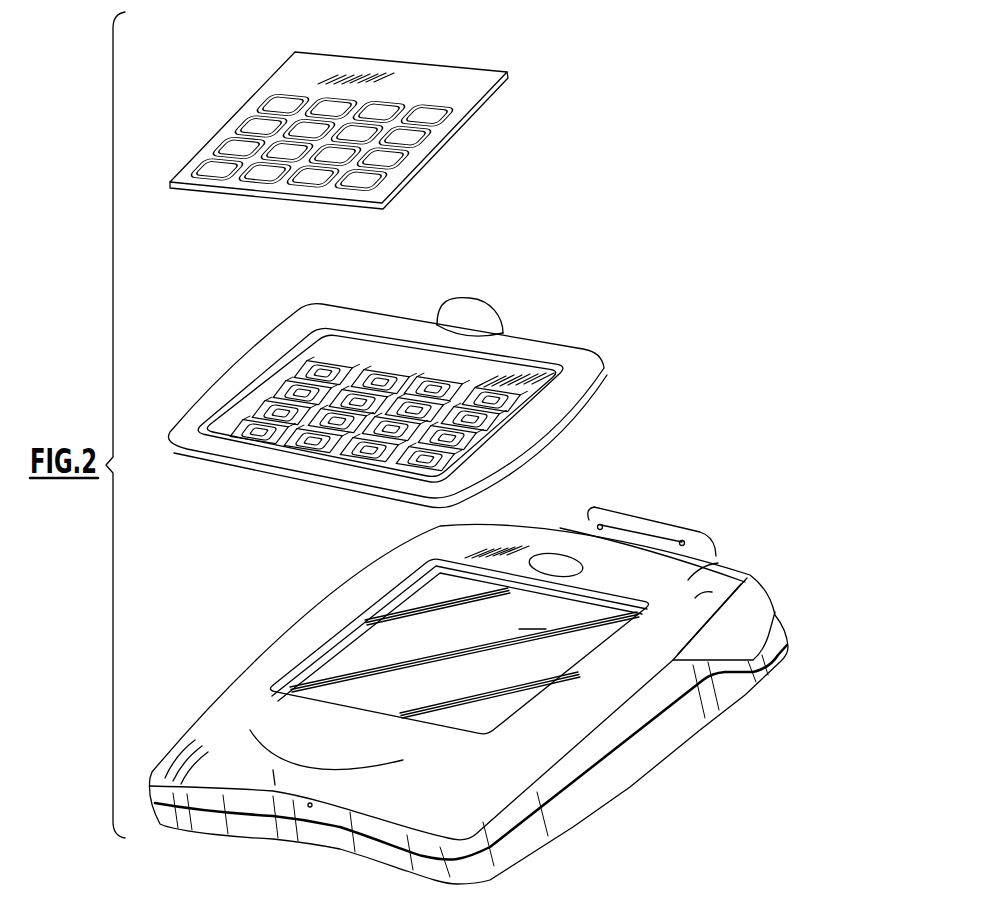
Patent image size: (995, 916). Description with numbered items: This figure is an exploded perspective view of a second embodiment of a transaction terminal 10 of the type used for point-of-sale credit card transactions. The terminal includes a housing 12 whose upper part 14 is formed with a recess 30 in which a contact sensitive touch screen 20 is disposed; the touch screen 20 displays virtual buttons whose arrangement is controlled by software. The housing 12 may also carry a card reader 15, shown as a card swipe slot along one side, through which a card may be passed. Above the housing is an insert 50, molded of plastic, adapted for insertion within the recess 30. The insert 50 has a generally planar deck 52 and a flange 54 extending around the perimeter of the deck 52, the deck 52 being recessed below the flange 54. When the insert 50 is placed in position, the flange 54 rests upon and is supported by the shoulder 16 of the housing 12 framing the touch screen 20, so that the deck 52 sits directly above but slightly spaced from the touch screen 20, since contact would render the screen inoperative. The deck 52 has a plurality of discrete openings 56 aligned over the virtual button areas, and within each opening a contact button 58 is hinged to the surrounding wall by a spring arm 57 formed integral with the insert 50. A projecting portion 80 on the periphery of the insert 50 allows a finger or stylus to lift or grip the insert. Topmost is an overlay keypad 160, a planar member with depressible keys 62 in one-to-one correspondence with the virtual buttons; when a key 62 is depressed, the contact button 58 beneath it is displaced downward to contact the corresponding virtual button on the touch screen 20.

The transaction terminal 10 is at (480, 695).
The housing 12 is at (193, 705).
The upper part of the housing 14 is at (610, 733).
The card reader 15 is at (748, 590).
The shoulder of the housing 16 is at (459, 646).
The touch screen 20 is at (418, 672).
The recess 30 is at (460, 637).
The insert 50 is at (414, 389).
The deck 52 is at (537, 385).
The flange 54 is at (540, 433).
The discrete openings 56 is at (390, 377).
The spring arm 57 is at (447, 377).
The contact buttons 58 is at (432, 363).
The depressible keys 62 is at (392, 100).
The projecting portion 80 is at (477, 302).
The overlay keypad 160 is at (353, 123).